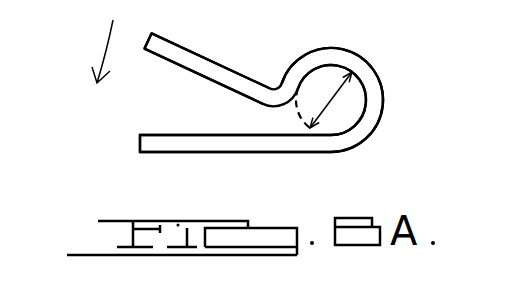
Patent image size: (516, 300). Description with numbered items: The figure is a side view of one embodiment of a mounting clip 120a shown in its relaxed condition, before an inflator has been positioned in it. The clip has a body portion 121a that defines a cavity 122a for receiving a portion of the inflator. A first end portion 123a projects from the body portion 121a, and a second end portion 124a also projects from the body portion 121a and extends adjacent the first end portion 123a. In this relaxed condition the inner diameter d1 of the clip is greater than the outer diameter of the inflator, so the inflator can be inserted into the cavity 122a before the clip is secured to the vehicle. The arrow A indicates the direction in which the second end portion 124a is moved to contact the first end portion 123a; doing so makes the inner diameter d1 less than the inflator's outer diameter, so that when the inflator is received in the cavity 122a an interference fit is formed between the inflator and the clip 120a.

The mounting clip 120a is at (357, 190).
The body portion 121a is at (363, 132).
The cavity 122a is at (356, 101).
The first end portion 123a is at (176, 145).
The second end portion 124a is at (176, 54).
The inner diameter d1 is at (352, 72).
The arrow A is at (93, 62).